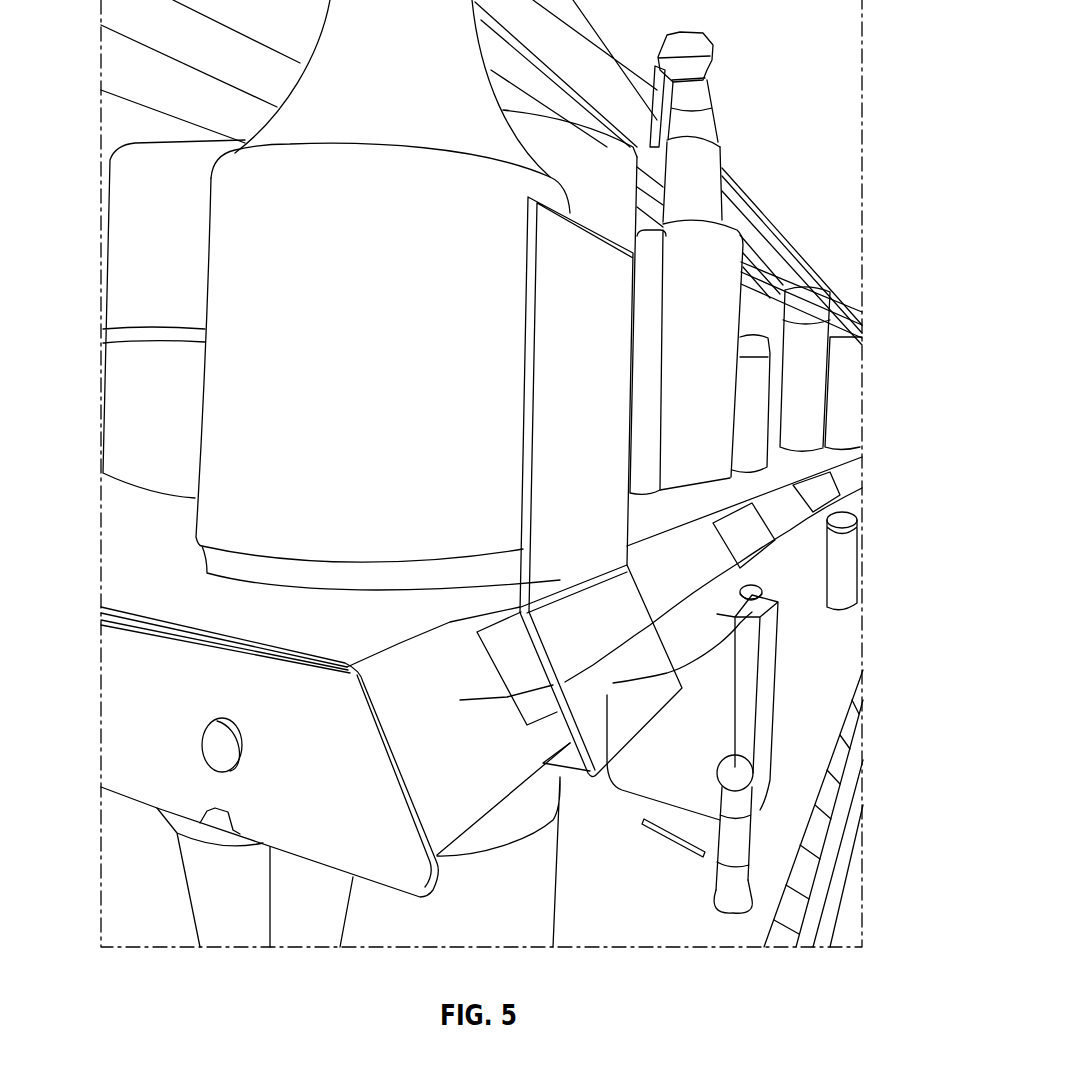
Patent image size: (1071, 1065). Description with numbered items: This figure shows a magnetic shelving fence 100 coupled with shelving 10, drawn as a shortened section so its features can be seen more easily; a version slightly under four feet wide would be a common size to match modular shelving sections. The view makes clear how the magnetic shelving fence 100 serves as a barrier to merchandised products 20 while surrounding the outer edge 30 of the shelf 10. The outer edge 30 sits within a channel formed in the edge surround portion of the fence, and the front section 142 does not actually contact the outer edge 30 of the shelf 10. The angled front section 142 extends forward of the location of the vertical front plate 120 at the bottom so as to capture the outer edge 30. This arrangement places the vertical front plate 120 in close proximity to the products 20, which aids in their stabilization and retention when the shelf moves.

The shelving 10 is at (145, 687).
The merchandised products 20 is at (363, 342).
The outer edge 30 is at (640, 562).
The magnetic shelving fence 100 is at (690, 243).
The vertical front plate 120 is at (573, 400).
The front section 142 is at (717, 616).